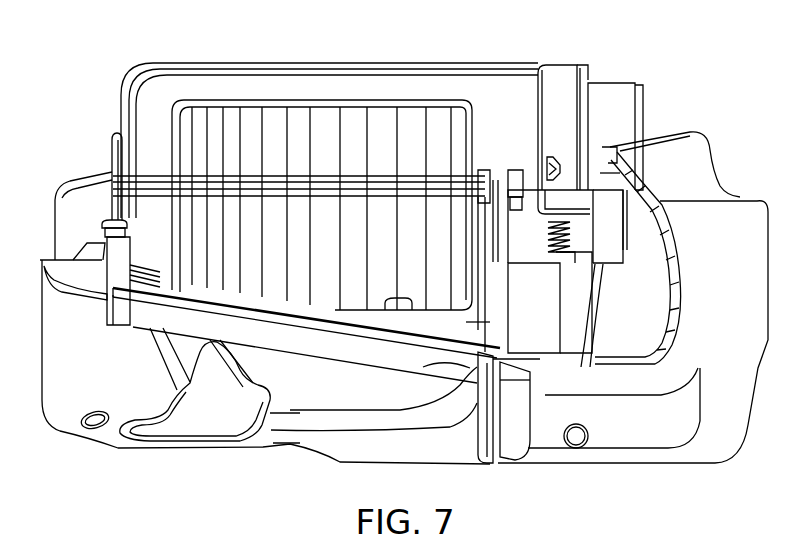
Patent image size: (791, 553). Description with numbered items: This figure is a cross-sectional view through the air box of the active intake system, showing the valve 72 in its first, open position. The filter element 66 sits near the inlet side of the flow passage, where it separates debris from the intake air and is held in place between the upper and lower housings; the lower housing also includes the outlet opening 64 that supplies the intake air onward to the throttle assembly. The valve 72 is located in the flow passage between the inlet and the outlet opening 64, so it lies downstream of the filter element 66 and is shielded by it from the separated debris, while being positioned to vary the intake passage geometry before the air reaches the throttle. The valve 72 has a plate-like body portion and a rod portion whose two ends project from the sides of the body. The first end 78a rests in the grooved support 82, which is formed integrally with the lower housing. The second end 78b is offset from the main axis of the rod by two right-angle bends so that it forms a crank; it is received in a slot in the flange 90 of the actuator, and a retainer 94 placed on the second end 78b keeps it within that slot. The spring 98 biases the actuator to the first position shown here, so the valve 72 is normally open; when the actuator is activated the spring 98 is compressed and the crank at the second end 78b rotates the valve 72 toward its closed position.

The outlet opening 64 is at (470, 365).
The filter element 66 is at (276, 122).
The valve 72 is at (342, 181).
The first end 78a is at (101, 176).
The second end 78b is at (522, 163).
The grooved support 82 is at (68, 231).
The flange 90 is at (540, 205).
The retainer 94 is at (553, 161).
The spring 98 is at (540, 258).